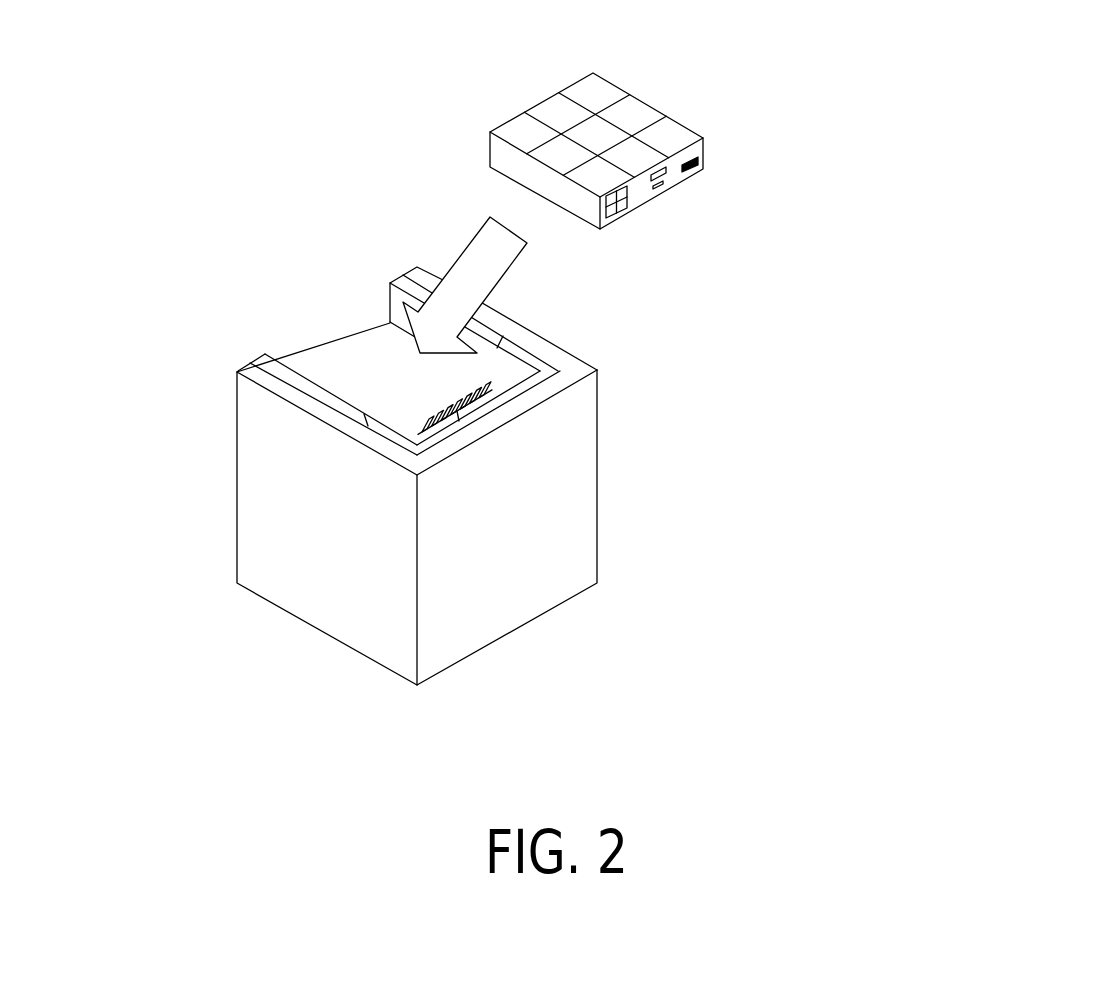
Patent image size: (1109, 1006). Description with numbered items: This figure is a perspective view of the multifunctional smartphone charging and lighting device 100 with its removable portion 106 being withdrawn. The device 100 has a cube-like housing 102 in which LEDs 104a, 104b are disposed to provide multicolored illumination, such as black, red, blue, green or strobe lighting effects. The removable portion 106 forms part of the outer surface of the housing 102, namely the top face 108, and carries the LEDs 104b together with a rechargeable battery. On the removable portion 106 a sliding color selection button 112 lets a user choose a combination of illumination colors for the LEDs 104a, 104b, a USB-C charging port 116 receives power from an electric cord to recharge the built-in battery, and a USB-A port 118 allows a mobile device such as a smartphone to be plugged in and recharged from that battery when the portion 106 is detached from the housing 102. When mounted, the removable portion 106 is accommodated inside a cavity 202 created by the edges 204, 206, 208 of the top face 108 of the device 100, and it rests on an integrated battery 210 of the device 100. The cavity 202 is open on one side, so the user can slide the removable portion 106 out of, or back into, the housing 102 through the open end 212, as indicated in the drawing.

The multifunctional smartphone charging and lighting device 100 is at (266, 192).
The housing 102 is at (275, 636).
The LEDs 104a is at (560, 560).
The LEDs 104b is at (594, 101).
The removable portion 106 is at (707, 113).
The top face 108 is at (417, 279).
The sliding color selection button 112 is at (609, 223).
The charging port 116 is at (665, 191).
The USB port 118 is at (702, 166).
The cavity 202 is at (368, 358).
The edge 204 is at (256, 369).
The edge 206 is at (515, 408).
The edge 208 is at (507, 324).
The integrated battery 210 is at (377, 387).
The open end 212 is at (319, 363).